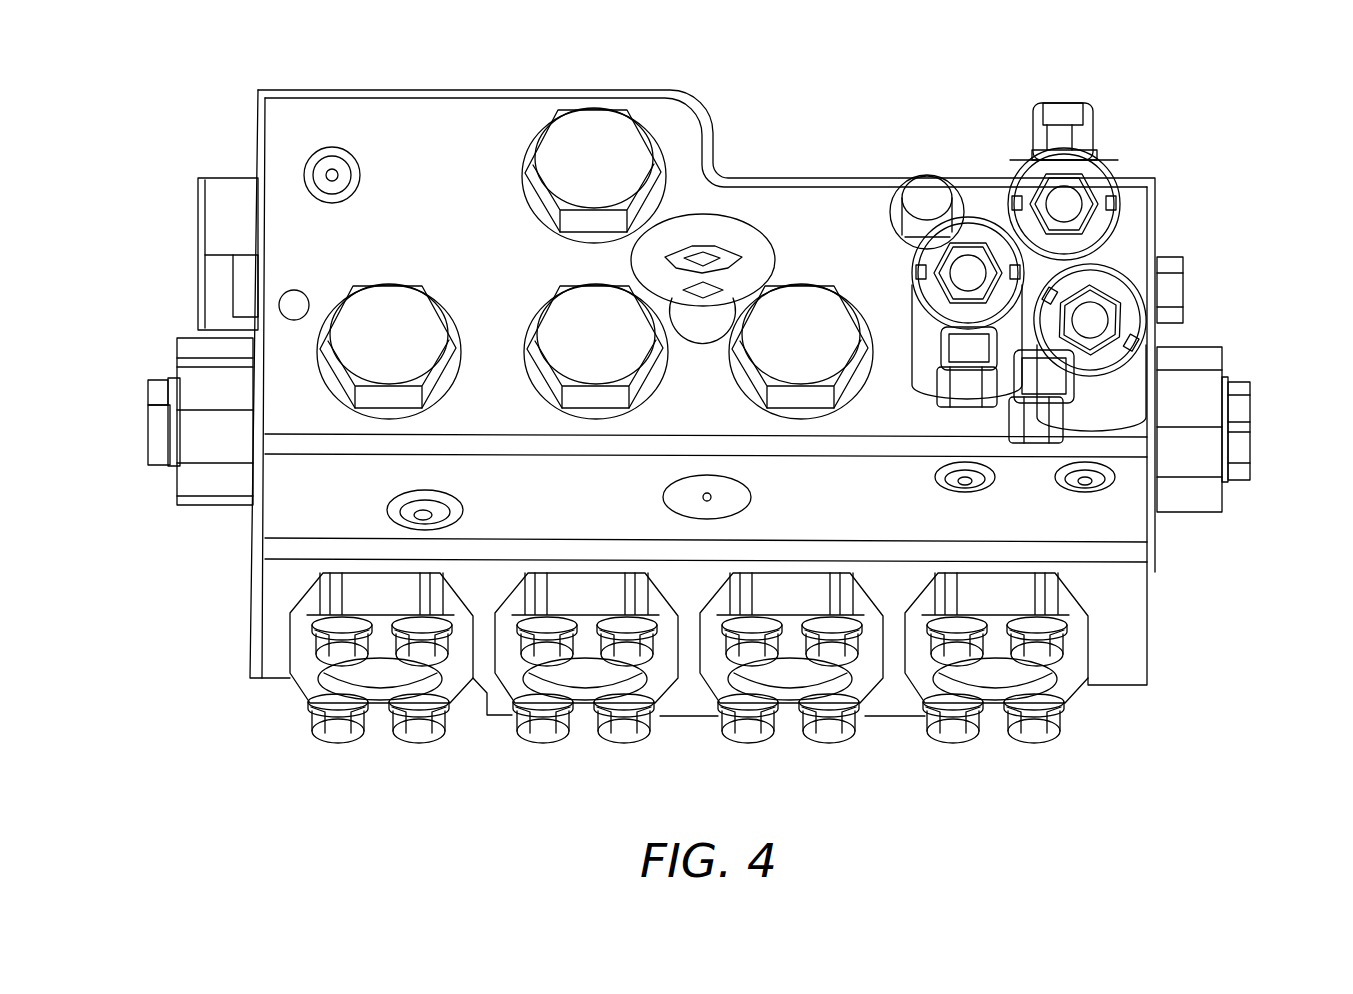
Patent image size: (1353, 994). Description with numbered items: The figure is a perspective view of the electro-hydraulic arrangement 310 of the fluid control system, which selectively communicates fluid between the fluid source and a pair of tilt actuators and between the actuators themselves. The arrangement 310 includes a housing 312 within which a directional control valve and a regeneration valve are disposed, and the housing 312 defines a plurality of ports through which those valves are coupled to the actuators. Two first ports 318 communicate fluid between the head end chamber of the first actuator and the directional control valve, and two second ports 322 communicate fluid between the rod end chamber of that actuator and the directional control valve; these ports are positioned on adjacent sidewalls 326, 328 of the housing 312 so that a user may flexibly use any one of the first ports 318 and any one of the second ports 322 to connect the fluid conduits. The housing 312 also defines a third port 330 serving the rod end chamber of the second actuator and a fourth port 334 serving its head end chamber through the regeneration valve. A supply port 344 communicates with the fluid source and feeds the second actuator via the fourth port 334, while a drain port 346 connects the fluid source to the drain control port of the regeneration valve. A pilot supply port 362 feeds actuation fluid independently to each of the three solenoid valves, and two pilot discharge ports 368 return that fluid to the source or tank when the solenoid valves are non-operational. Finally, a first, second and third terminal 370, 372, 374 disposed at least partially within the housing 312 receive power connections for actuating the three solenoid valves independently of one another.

The arrangement 310 is at (1268, 86).
The housing 312 is at (256, 85).
The first port 318 is at (572, 320).
The second port 322 is at (802, 323).
The sidewall 326 is at (445, 137).
The sidewall 328 is at (268, 584).
The third port 330 is at (997, 665).
The fourth port 334 is at (382, 665).
The supply port 344 is at (390, 310).
The drain port 346 is at (593, 158).
The pilot supply port 362 is at (925, 196).
The pilot discharge port 368 is at (233, 288).
The first terminal 370 is at (1077, 375).
The second terminal 372 is at (955, 328).
The third terminal 374 is at (1060, 135).